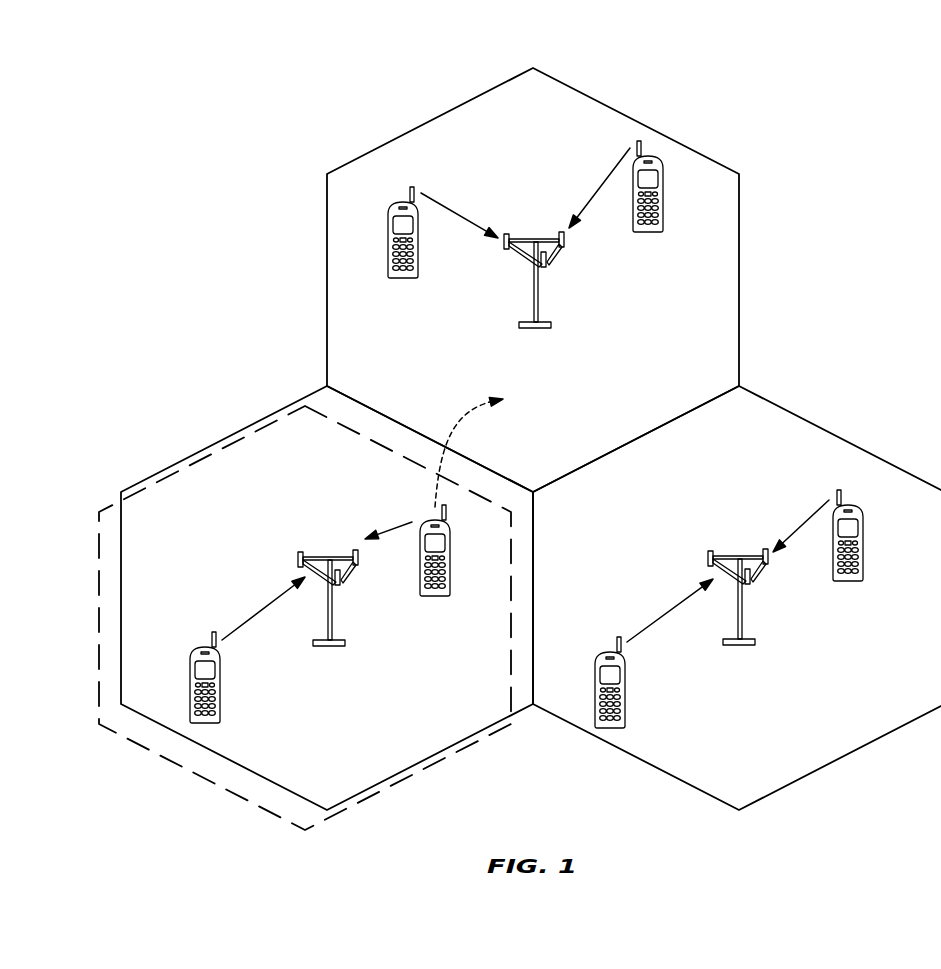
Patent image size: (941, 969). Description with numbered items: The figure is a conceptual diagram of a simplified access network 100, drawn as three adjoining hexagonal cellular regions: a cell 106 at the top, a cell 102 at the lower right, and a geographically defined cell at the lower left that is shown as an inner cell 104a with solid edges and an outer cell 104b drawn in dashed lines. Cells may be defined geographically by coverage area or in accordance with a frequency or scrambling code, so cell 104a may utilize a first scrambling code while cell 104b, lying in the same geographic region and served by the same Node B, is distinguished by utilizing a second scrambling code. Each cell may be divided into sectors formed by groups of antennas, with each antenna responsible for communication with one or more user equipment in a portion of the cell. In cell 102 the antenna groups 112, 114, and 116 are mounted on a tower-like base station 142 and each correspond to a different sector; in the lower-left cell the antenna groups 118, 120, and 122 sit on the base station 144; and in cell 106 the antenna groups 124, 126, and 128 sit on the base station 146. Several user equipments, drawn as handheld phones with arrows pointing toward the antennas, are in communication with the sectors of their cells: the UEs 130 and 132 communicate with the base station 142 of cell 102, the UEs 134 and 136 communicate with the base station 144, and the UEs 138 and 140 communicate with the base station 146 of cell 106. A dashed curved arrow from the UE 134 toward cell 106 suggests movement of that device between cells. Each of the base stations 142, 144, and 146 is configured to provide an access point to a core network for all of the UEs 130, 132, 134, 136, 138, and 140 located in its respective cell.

The access network 100 is at (850, 98).
The cell 102 is at (838, 435).
The cell 104a is at (200, 450).
The cell 104b is at (97, 535).
The cell 106 is at (620, 108).
The antenna group 112 is at (708, 556).
The antenna group 114 is at (750, 586).
The antenna group 116 is at (768, 564).
The antenna group 118 is at (340, 588).
The antenna group 120 is at (356, 567).
The antenna group 122 is at (298, 556).
The antenna group 124 is at (505, 254).
The antenna group 126 is at (545, 270).
The antenna group 128 is at (561, 252).
The UE 130 is at (861, 530).
The UE 132 is at (595, 680).
The UE 134 is at (450, 548).
The UE 136 is at (193, 677).
The UE 138 is at (397, 279).
The UE 140 is at (655, 234).
The base station 142 is at (739, 577).
The base station 144 is at (329, 577).
The base station 146 is at (533, 261).